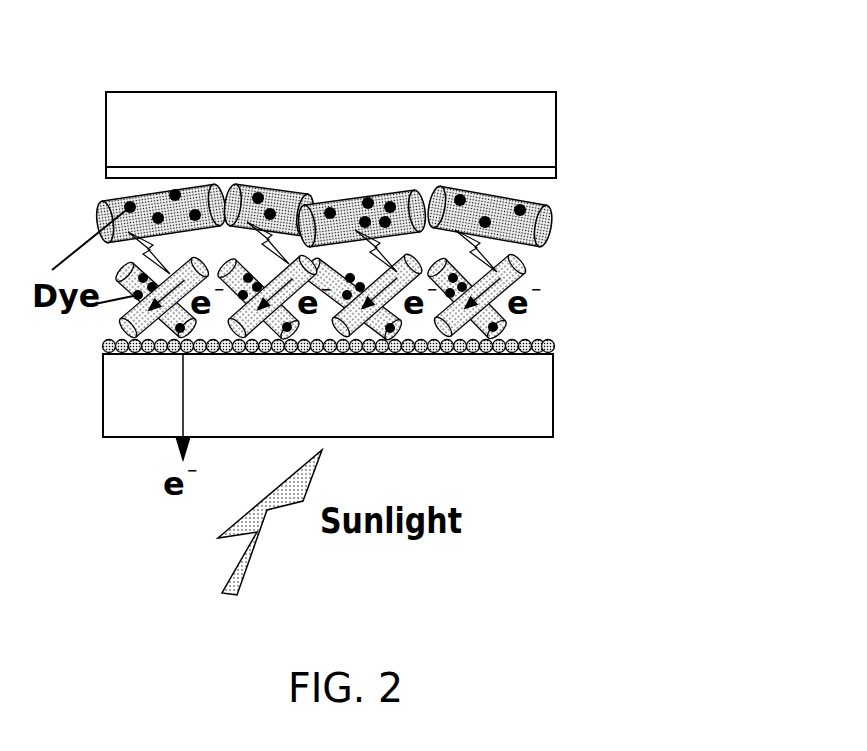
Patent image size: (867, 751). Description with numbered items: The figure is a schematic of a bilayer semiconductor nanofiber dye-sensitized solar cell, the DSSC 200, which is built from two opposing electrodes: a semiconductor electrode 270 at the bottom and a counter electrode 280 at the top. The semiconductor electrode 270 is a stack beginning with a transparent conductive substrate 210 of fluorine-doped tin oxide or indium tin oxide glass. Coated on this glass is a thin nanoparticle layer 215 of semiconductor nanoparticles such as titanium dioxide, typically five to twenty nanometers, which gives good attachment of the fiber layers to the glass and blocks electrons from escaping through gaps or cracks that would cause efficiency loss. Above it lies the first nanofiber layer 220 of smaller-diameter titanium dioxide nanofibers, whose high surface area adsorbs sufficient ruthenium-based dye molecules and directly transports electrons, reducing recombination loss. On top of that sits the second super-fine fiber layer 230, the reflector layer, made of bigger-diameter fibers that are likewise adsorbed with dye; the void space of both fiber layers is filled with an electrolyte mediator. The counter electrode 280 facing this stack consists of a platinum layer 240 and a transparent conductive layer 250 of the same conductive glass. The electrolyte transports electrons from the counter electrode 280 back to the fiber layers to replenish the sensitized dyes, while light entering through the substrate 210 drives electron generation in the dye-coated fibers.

The DSSC 200 is at (513, 45).
The counter electrode 280 is at (653, 98).
The transparent conductive layer 250 is at (556, 129).
The platinum layer 240 is at (556, 172).
The semiconductor electrode 270 is at (655, 365).
The second super-fine fiber layer 230 is at (556, 235).
The first nanofiber layer 220 is at (553, 310).
The nanoparticle layer 215 is at (553, 345).
The transparent conductive substrate 210 is at (553, 395).